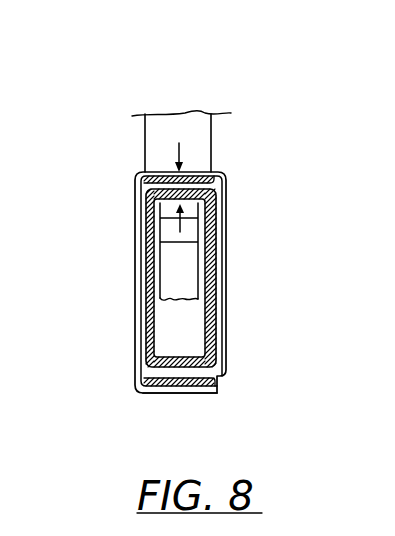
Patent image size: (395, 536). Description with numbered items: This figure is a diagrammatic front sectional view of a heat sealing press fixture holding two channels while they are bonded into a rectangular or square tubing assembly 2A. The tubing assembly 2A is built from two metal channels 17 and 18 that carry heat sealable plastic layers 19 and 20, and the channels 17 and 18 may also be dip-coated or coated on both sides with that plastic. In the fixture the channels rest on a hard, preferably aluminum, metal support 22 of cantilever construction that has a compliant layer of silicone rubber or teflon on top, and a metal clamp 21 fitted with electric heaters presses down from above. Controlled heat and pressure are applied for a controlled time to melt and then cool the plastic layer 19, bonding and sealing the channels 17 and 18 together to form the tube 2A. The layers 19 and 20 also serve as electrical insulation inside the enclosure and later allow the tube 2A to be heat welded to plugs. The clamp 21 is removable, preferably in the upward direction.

The metal clamp 21 is at (187, 133).
The metal channel 17 is at (217, 175).
The metal channel 18 is at (223, 250).
The heat sealable plastic layer 19 is at (152, 321).
The heat sealable plastic layer 20 is at (212, 315).
The metal support 22 is at (166, 254).
The tubing assembly 2A is at (163, 396).